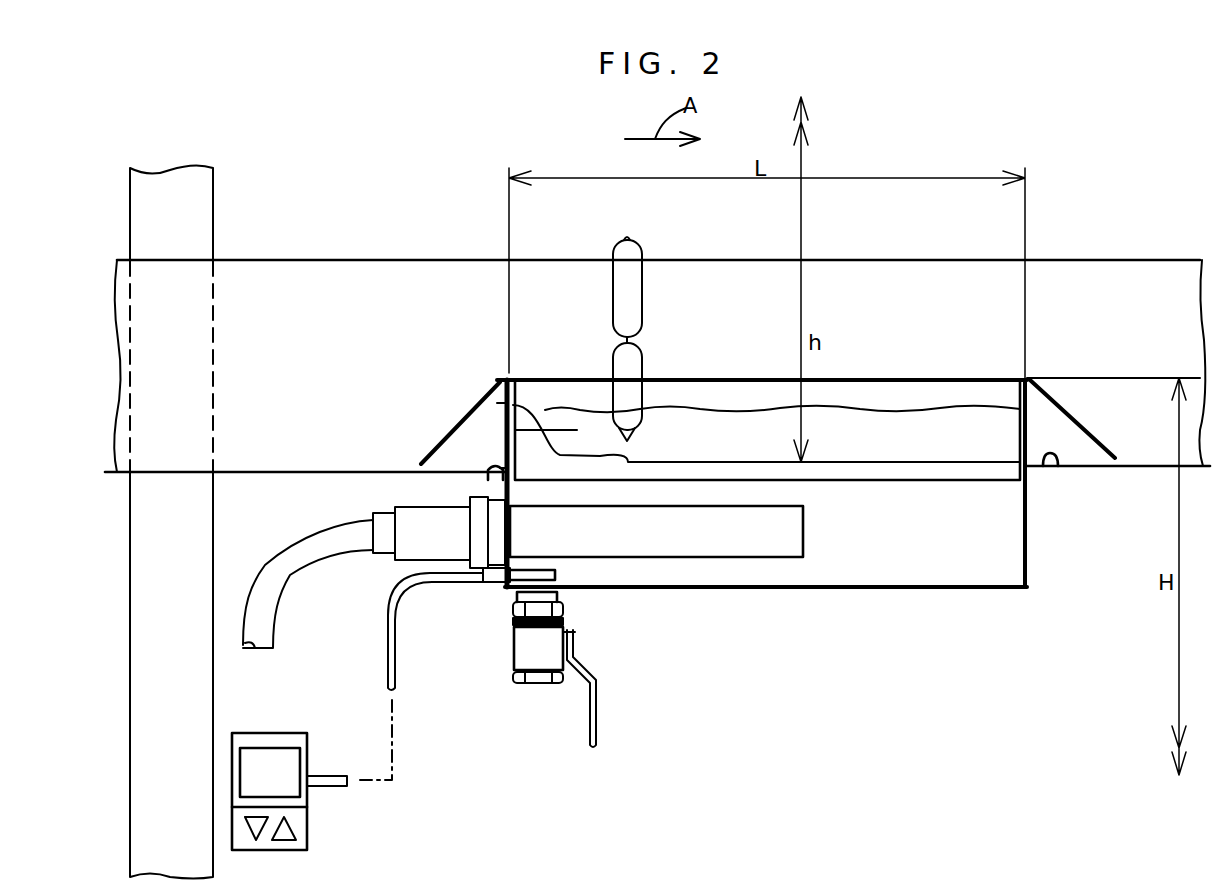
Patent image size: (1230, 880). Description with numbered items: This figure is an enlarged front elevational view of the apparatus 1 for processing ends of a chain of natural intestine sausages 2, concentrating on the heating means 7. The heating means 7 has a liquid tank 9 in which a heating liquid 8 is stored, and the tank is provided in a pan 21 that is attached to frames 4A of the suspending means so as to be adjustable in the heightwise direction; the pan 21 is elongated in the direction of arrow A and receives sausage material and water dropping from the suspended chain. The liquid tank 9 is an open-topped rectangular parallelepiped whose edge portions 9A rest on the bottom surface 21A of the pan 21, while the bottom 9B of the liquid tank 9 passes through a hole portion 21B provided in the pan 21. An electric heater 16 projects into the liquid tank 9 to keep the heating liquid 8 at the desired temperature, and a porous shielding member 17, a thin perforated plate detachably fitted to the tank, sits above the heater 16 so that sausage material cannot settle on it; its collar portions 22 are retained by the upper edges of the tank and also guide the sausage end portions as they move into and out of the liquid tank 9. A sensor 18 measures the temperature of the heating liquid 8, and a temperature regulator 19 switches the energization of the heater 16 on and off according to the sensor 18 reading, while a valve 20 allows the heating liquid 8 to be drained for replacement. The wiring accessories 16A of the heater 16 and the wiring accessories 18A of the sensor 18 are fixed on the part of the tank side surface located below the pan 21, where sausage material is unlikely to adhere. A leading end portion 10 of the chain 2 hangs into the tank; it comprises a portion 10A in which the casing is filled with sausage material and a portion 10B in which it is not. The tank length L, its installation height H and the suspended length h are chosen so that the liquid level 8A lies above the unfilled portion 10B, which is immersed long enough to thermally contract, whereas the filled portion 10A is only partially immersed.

The apparatus for processing ends of a chain of natural intestine sausages 1 is at (750, 754).
The chain of natural intestine sausages 2 is at (612, 298).
The frames 4A is at (140, 733).
The heating means 7 is at (855, 720).
The heating liquid 8 is at (577, 430).
The liquid level 8A is at (965, 400).
The liquid tank 9 is at (980, 588).
The edge portions 9A is at (1060, 468).
The bottom of the liquid tank 9B is at (724, 588).
The leading end portion 10 is at (642, 362).
The portion where the sausage material is filled 10A is at (613, 365).
The portion where the sausage material is not filled 10B is at (497, 403).
The heater 16 is at (767, 528).
The wiring accessories of the heater 16A is at (250, 652).
The porous shielding member 17 is at (853, 380).
The sensor 18 is at (557, 592).
The wiring accessories of the sensor 18A is at (421, 584).
The temperature regulator 19 is at (307, 830).
The valve 20 is at (537, 650).
The pan 21 is at (262, 282).
The bottom surface of the pan 21A is at (246, 460).
The hole portion 21B is at (500, 468).
The collar portions 22 is at (432, 458).